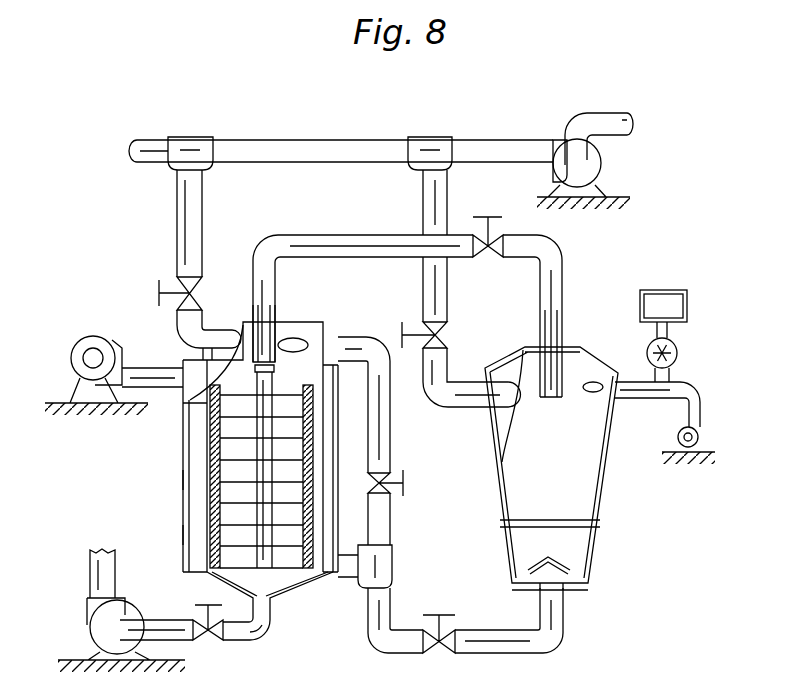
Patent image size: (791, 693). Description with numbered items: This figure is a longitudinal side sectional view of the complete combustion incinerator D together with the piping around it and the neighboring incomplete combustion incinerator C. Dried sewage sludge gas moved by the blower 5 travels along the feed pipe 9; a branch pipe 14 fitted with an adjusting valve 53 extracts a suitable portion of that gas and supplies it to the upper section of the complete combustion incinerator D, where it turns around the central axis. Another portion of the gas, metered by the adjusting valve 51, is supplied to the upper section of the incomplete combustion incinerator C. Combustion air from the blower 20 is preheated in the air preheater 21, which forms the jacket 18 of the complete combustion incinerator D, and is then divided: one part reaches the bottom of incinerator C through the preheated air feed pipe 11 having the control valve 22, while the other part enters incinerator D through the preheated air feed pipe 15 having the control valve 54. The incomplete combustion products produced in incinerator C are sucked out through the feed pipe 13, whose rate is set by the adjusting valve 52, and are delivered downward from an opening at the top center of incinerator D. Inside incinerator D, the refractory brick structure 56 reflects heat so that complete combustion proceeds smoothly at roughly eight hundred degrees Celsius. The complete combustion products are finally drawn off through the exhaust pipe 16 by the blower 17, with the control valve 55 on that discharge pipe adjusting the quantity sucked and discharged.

The blower 5 is at (557, 138).
The feed pipe 9 is at (487, 140).
The preheated air feed pipe 11 is at (560, 645).
The feed pipe 13 is at (267, 325).
The branch pipe 14 is at (202, 213).
The preheated air feed pipe 15 is at (392, 435).
The exhaust pipe 16 is at (257, 628).
The blower 17 is at (98, 605).
The jacket 18 is at (183, 535).
The blower 20 is at (88, 338).
The air preheater 21 is at (183, 480).
The control valve 22 is at (440, 615).
The adjusting valve 51 is at (402, 330).
The adjusting valve 52 is at (490, 217).
The adjusting valve 53 is at (159, 293).
The control valve 54 is at (403, 483).
The control valve 55 is at (203, 603).
The refractory brick structure 56 is at (228, 510).
The incomplete combustion incinerator C is at (603, 490).
The complete combustion incinerator D is at (230, 443).